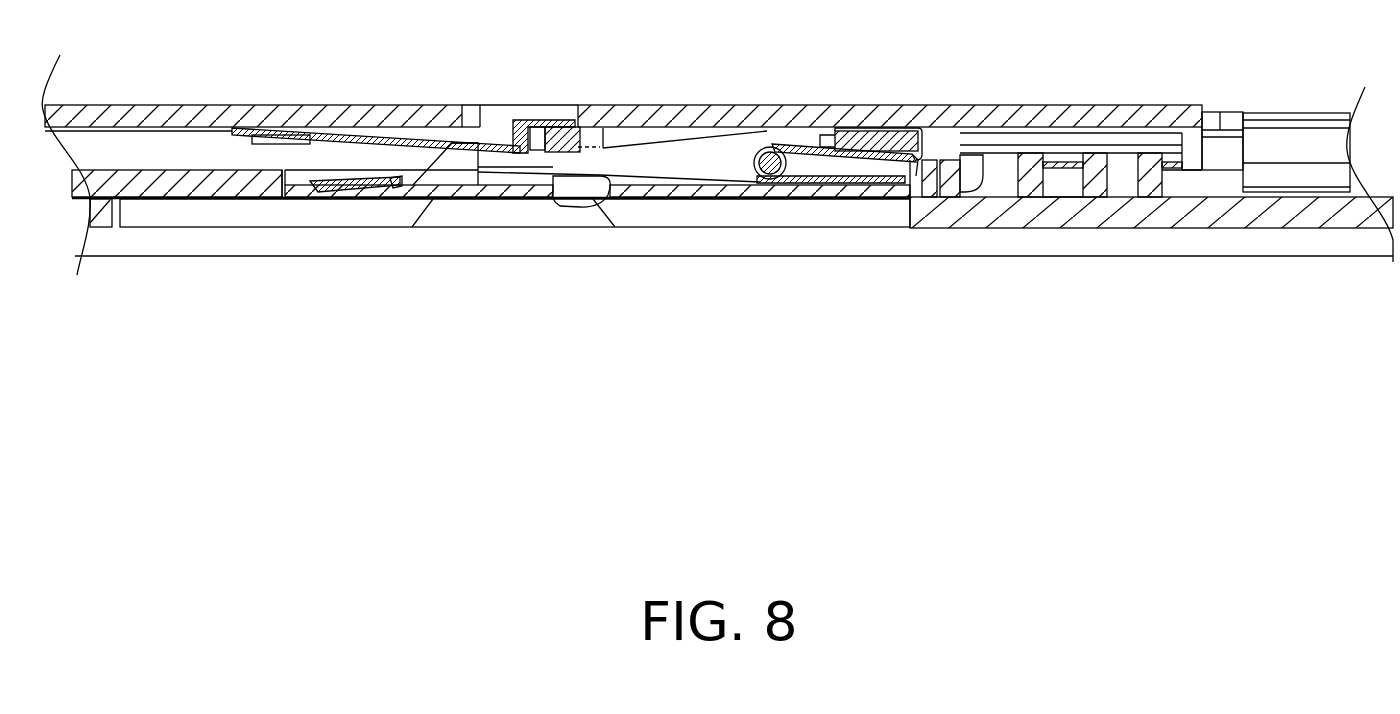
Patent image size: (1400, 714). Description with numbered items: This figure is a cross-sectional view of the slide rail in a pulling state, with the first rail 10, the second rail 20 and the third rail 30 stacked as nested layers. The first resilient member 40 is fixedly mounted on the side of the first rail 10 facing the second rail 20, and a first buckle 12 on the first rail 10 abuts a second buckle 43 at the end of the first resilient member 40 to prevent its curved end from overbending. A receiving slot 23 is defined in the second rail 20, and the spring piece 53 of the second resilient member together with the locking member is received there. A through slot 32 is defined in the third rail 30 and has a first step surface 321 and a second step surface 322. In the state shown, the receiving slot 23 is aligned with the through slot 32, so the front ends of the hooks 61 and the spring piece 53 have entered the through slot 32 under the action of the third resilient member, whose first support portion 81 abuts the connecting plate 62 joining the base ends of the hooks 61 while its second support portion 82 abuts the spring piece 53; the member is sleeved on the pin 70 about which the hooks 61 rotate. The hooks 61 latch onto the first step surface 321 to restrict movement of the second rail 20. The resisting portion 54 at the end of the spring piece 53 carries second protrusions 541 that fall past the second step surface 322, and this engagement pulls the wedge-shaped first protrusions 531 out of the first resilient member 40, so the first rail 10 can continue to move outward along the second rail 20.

The first rail 10 is at (1092, 113).
The first buckle 12 is at (558, 122).
The second rail 20 is at (1217, 150).
The receiving slot 23 is at (297, 182).
The third rail 30 is at (1300, 143).
The through slot 32 is at (193, 212).
The first resilient member 40 is at (280, 137).
The second buckle 43 is at (543, 122).
The spring piece 53 is at (495, 198).
The first protrusions 531 is at (452, 160).
The resisting portion 54 is at (357, 197).
The second protrusions 541 is at (392, 178).
The hooks 61 is at (578, 202).
The connecting plate 62 is at (893, 132).
The pin 70 is at (770, 147).
The first support portion 81 is at (850, 142).
The second support portion 82 is at (833, 188).
The first step surface 321 is at (603, 228).
The second step surface 322 is at (427, 215).